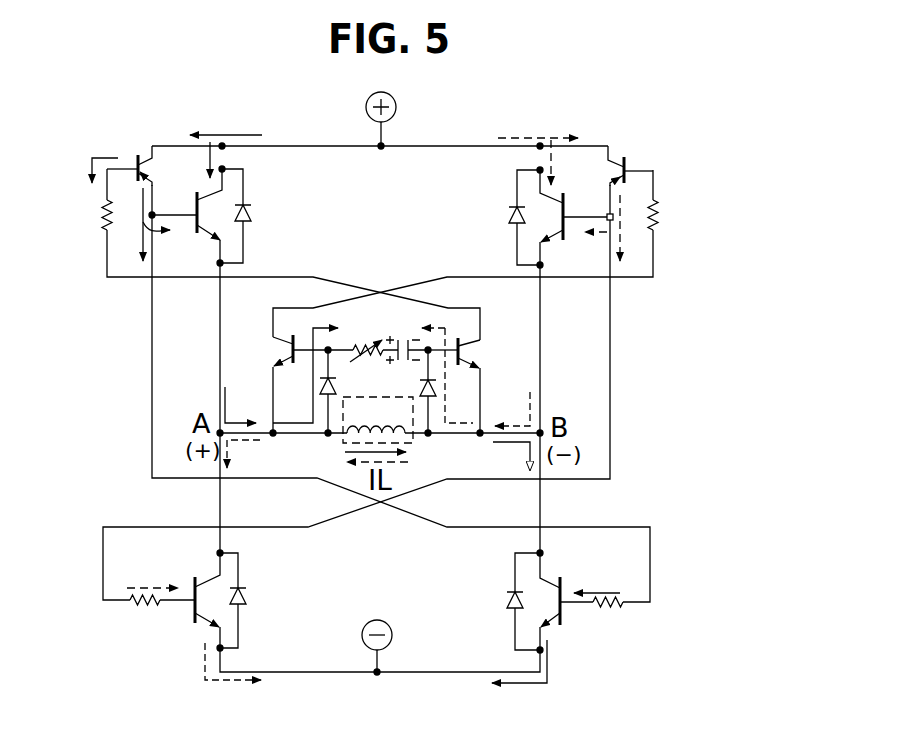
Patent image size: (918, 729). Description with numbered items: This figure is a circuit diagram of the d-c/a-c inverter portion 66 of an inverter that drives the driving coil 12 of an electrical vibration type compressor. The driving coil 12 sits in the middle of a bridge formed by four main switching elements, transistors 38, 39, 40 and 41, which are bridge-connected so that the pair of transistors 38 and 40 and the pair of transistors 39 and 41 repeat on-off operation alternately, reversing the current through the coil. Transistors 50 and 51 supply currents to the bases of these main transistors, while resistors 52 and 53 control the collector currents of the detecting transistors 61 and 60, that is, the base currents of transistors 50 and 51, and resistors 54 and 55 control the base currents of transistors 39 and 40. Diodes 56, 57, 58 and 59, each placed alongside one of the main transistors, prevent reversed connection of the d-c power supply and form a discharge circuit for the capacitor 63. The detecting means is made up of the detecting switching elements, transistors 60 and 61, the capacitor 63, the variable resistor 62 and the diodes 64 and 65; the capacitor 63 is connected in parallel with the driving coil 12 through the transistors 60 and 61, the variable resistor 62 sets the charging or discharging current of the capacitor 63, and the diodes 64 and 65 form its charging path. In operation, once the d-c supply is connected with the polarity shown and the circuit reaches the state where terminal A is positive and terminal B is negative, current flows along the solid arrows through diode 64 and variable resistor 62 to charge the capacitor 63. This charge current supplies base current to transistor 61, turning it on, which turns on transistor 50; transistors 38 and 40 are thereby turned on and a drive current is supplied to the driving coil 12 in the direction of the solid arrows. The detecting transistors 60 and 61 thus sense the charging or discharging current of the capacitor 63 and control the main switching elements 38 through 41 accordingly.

The driving coil 12 is at (380, 420).
The main switching element 38 is at (200, 236).
The main switching element 39 is at (200, 622).
The main switching element 40 is at (563, 584).
The main switching element 41 is at (566, 196).
The transistor 50 is at (138, 156).
The transistor 51 is at (625, 160).
The resistor 52 is at (101, 217).
The resistor 53 is at (660, 218).
The resistor 54 is at (145, 604).
The resistor 55 is at (606, 608).
The diode 56 is at (252, 212).
The diode 57 is at (247, 598).
The diode 58 is at (504, 598).
The diode 59 is at (508, 215).
The detecting switching element 60 is at (286, 350).
The detecting switching element 61 is at (465, 350).
The variable resistor 62 is at (363, 335).
The capacitor 63 is at (407, 337).
The diode 64 is at (349, 391).
The diode 65 is at (450, 391).
The d-c/a-c inverter portion 66 is at (555, 110).